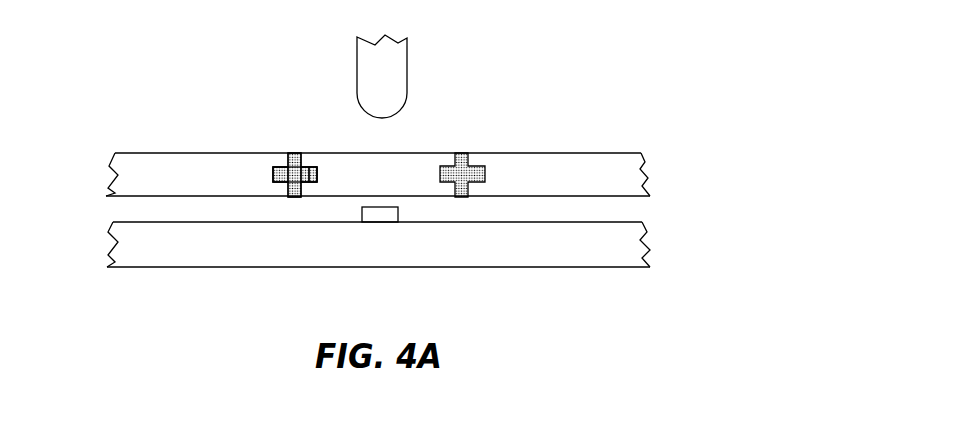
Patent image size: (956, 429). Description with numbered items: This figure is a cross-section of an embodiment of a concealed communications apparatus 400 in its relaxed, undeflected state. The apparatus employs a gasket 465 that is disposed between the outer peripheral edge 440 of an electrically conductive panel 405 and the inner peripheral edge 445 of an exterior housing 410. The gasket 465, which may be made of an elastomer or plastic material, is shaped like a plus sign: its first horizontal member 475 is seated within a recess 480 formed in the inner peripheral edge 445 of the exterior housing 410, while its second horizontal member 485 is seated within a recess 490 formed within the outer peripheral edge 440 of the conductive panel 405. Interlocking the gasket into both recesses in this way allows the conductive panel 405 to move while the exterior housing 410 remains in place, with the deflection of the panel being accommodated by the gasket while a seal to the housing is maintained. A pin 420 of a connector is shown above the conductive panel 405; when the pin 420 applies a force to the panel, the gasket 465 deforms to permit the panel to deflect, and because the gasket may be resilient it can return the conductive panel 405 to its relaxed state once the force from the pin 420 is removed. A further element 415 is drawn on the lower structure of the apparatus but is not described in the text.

The concealed communications apparatus 400 is at (623, 78).
The conductive panel 405 is at (375, 163).
The exterior housing 410 is at (623, 168).
The nut plate / receiving member 415 is at (378, 213).
The pin 420 is at (393, 67).
The outer peripheral edge 440 is at (308, 156).
The inner peripheral edge 445 is at (283, 157).
The gasket 465 is at (460, 153).
The first horizontal member 475 is at (277, 167).
The recess 480 is at (275, 173).
The second horizontal member 485 is at (302, 173).
The recess 490 is at (310, 173).